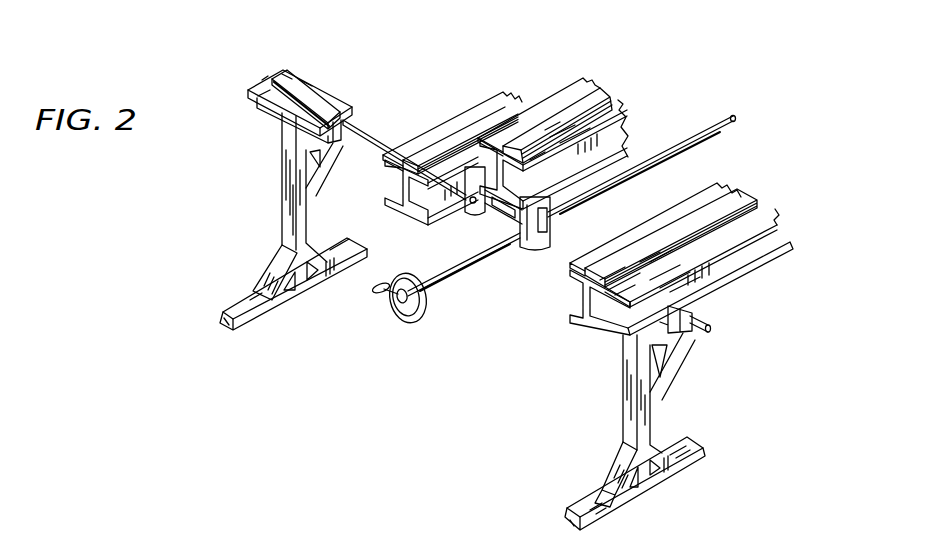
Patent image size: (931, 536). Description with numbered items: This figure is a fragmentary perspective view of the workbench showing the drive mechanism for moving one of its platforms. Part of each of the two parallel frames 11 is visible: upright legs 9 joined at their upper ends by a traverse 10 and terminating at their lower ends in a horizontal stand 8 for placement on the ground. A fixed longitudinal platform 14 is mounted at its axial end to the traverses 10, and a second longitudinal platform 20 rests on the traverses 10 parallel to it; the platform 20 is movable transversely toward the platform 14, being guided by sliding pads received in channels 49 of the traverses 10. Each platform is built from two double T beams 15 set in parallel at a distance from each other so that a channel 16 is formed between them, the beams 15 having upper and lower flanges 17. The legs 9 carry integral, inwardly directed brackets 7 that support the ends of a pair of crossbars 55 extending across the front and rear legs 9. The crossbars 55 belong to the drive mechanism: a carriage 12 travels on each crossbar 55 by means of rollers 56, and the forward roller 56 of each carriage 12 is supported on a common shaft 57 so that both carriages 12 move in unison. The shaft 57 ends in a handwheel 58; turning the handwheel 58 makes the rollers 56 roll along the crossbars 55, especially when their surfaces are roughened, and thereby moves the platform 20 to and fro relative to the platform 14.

The bracket 7 is at (665, 358).
The stand 8 is at (658, 480).
The leg 9 is at (647, 418).
The traverse 10 is at (267, 108).
The frame 11 is at (608, 358).
The carriage 12 is at (473, 196).
The fixed longitudinal platform 14 is at (790, 240).
The double T beam 15 is at (585, 305).
The channel 16 is at (607, 88).
The flange 17 is at (658, 230).
The movable longitudinal platform 20 is at (556, 72).
The channel 49 is at (302, 93).
The crossbar 55 is at (386, 135).
The roller 56 is at (540, 242).
The common shaft 57 is at (710, 118).
The handwheel 58 is at (405, 318).